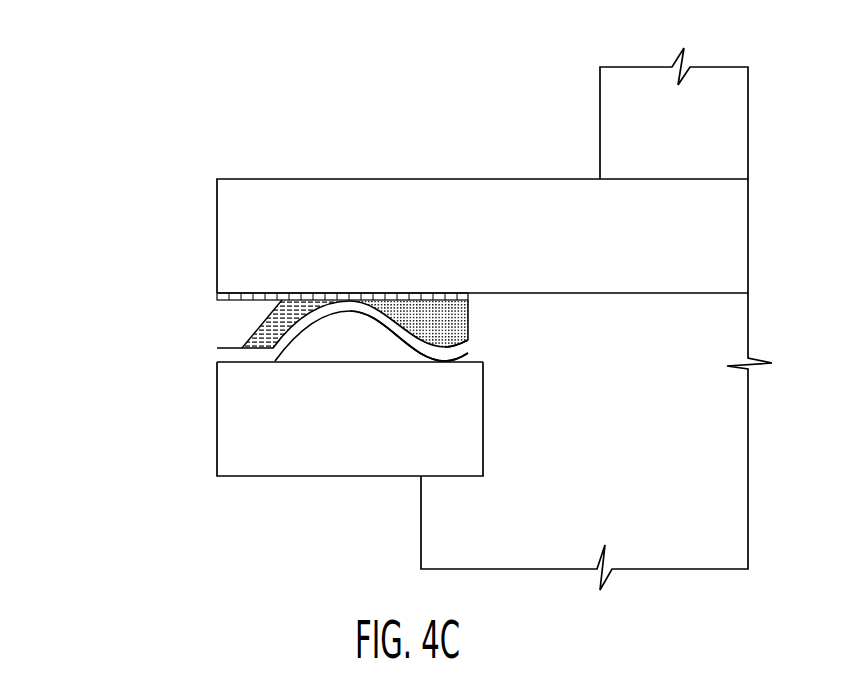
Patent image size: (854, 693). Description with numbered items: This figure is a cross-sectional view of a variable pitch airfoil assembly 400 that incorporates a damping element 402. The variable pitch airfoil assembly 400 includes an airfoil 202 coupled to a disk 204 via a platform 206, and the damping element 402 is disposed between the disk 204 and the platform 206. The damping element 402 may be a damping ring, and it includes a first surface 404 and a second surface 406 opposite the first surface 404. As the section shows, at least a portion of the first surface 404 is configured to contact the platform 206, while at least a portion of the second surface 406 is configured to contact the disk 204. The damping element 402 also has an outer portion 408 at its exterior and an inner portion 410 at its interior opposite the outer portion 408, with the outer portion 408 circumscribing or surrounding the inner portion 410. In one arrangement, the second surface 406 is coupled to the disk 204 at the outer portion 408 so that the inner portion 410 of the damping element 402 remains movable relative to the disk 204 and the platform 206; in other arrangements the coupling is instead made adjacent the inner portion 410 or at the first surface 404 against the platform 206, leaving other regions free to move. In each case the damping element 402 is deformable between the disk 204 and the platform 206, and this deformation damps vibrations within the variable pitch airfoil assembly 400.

The variable pitch airfoil assembly 400 is at (167, 64).
The airfoil 202 is at (606, 115).
The platform 206 is at (248, 221).
The disk 204 is at (226, 403).
The outer portion 408 is at (216, 362).
The first surface 404 is at (282, 316).
The damping element 402 is at (224, 355).
The second surface 406 is at (402, 348).
The inner portion 410 is at (476, 348).